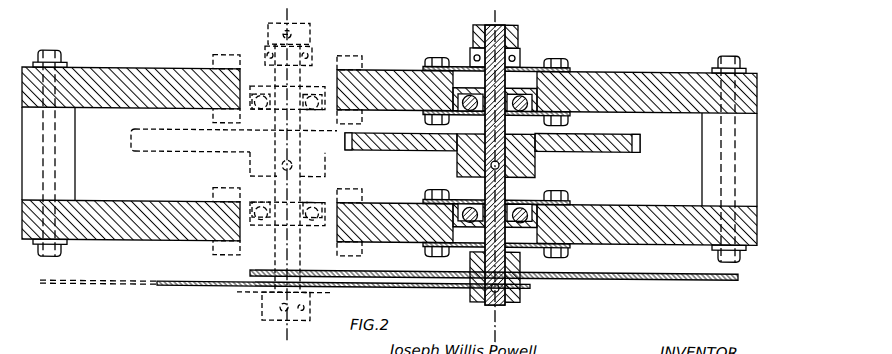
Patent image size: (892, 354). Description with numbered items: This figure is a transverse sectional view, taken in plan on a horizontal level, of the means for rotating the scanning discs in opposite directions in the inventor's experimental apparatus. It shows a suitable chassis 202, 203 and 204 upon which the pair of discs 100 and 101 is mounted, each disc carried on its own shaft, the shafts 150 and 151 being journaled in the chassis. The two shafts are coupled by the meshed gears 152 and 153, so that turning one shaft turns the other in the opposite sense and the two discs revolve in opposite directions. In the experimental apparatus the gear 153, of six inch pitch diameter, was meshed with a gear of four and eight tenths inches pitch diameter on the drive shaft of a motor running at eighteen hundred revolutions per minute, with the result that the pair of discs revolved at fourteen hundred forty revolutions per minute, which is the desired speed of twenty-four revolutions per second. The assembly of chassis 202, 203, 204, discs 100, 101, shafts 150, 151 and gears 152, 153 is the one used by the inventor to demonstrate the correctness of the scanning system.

The disc 100 is at (167, 287).
The disc 101 is at (590, 275).
The shaft 150 is at (278, 318).
The shaft 151 is at (495, 299).
The gear 152 is at (313, 149).
The gear 153 is at (470, 149).
The chassis 202 is at (750, 220).
The chassis 203 is at (745, 91).
The chassis 204 is at (742, 152).